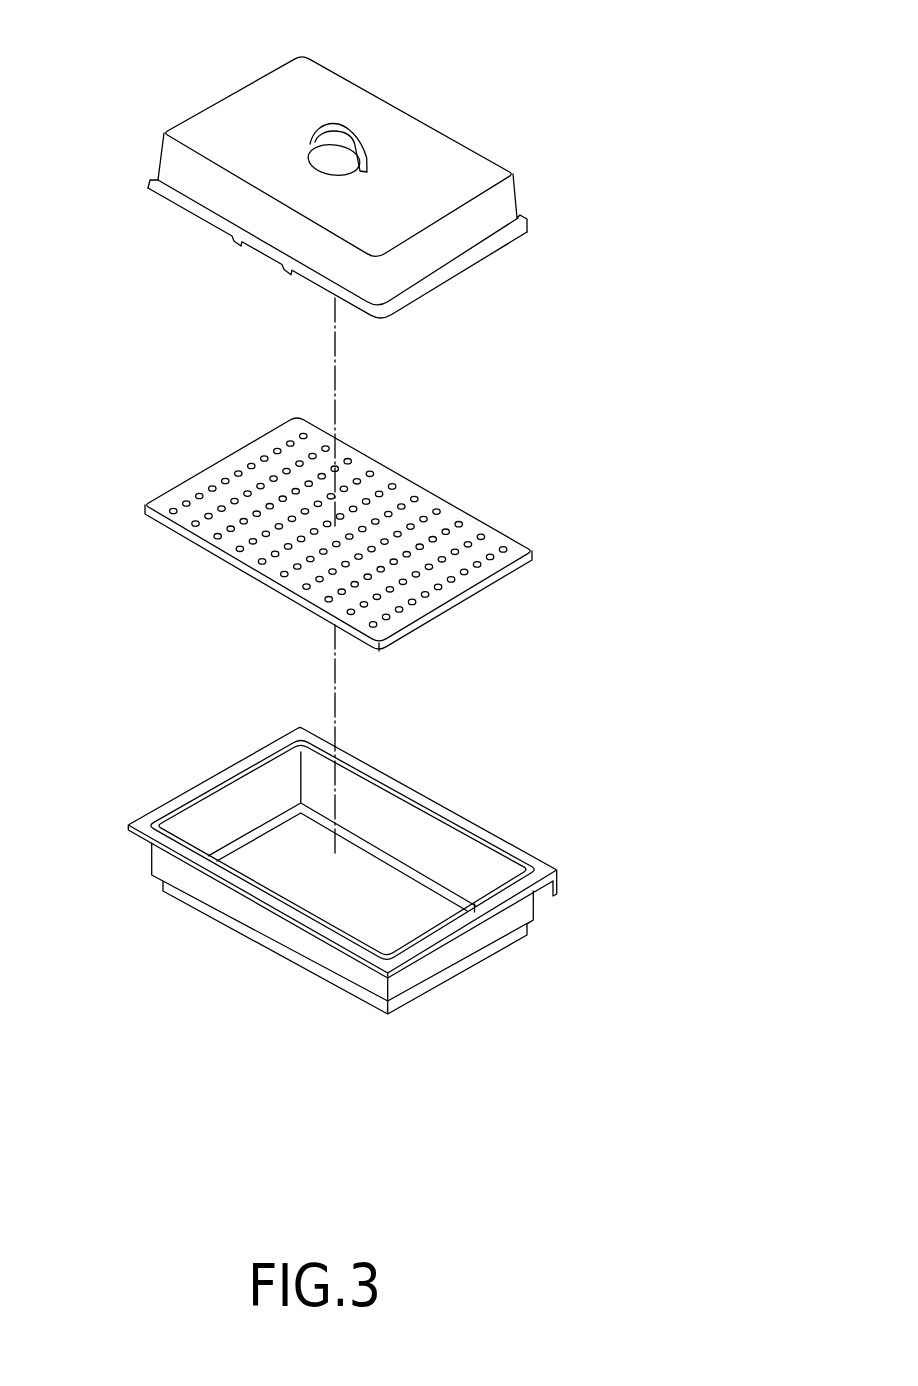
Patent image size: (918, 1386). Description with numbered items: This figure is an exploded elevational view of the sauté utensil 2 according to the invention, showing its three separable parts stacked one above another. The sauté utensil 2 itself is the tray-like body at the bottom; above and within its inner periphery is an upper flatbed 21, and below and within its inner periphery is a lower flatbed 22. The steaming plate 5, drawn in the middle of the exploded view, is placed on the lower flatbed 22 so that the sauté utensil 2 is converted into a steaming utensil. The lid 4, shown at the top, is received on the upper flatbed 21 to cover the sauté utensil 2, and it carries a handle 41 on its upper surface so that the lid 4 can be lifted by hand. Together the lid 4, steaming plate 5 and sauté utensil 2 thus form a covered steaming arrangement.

The sauté utensil 2 is at (316, 852).
The upper flatbed 21 is at (267, 773).
The lower flatbed 22 is at (222, 849).
The lid 4 is at (447, 153).
The handle 41 is at (323, 125).
The steaming plate 5 is at (522, 550).